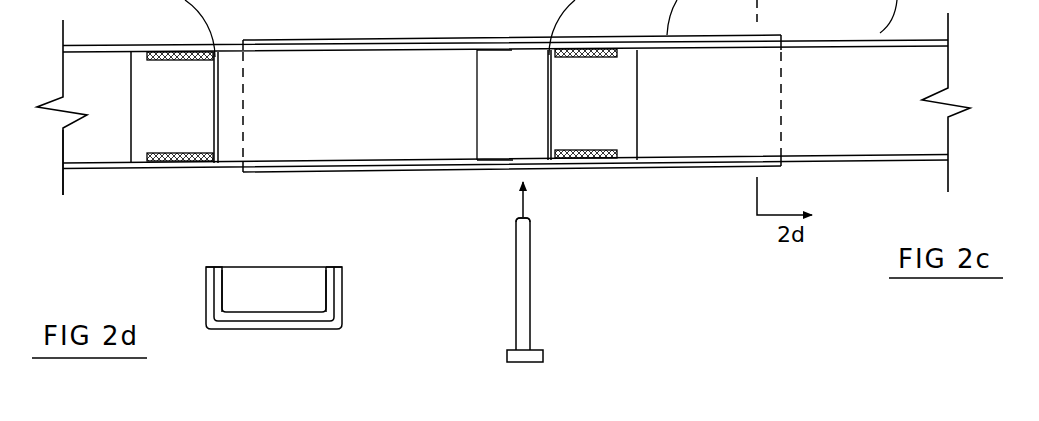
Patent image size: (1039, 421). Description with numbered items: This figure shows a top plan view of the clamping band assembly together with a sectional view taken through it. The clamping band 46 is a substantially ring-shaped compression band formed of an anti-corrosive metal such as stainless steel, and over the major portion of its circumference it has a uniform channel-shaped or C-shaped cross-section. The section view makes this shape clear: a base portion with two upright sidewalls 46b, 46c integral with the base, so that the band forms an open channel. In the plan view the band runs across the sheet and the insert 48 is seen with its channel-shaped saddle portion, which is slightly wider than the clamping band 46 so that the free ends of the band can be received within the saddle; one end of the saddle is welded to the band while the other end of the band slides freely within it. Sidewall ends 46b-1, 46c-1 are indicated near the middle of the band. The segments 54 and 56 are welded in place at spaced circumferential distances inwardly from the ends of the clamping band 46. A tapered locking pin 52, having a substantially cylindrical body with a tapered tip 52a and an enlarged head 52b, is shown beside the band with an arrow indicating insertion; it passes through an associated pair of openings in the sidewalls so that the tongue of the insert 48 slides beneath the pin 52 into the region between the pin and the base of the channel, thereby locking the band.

In FIG. 2D, the clamping band 46 is at (263, 310).
In FIG. 2D, the upright sidewall 46b is at (222, 290).
In FIG. 2D, the upright sidewall 46c is at (326, 290).
In FIG. 2C, the first side wall end 46b-1 is at (512, 54).
In FIG. 2C, the second side wall end 46c-1 is at (513, 159).
In FIG. 2C, the insert 48 is at (110, 145).
In FIG. 2D, the insert 48 is at (283, 325).
In FIG. 2C, the tapered locking pin 52 is at (517, 277).
In FIG. 2C, the tapered tip 52a is at (516, 218).
In FIG. 2C, the enlarged head 52b is at (507, 355).
In FIG. 2C, the segment 54 is at (190, 125).
In FIG. 2C, the segment 56 is at (602, 125).